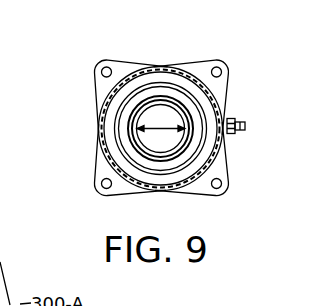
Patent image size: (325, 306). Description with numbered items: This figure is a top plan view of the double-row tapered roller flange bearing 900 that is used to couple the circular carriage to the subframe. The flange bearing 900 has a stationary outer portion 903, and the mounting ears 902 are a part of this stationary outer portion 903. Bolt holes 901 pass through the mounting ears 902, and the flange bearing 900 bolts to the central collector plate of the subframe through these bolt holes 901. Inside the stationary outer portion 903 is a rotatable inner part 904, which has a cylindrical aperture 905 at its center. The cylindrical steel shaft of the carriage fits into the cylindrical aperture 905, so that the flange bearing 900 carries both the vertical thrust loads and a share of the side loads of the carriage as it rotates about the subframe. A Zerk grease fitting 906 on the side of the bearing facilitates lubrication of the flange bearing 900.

The double-row tapered roller flange bearing 900 is at (80, 82).
The bolt holes 901 is at (211, 61).
The mounting ears 902 is at (212, 82).
The stationary outer portion 903 is at (110, 117).
The rotatable inner part 904 is at (195, 143).
The cylindrical aperture 905 is at (161, 128).
The Zerk grease fitting 906 is at (242, 122).